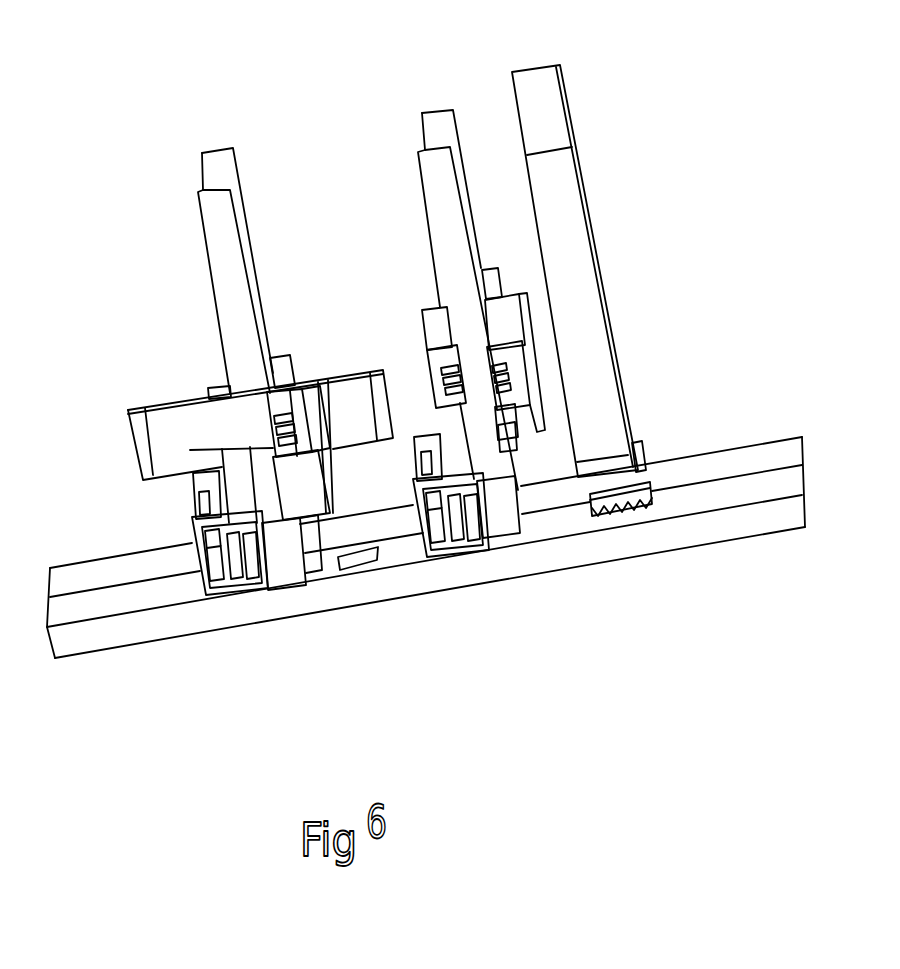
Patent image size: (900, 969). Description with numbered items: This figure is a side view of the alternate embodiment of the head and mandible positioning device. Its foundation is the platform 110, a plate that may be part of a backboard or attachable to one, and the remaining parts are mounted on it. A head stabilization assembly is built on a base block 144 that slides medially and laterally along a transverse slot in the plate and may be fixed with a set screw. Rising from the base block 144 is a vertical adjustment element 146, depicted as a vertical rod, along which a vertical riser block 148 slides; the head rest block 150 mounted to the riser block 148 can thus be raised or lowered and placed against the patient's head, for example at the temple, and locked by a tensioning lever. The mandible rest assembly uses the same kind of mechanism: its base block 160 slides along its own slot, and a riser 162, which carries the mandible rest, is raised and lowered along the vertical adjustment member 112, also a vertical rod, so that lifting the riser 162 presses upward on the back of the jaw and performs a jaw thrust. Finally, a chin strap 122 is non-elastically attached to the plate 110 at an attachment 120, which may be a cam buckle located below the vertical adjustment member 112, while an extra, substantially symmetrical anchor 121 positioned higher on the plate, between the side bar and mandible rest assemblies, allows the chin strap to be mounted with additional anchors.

The platform 110 is at (788, 452).
The vertical adjustment member 112 is at (438, 127).
The attachment 120 is at (637, 523).
The anchor 121 is at (357, 562).
The chin strap 122 is at (550, 110).
The base block 144 is at (208, 592).
The vertical adjustment element 146 is at (222, 167).
The vertical riser block 148 is at (235, 482).
The head rest block 150 is at (165, 430).
The base block 160 is at (427, 558).
The riser 162 is at (448, 432).